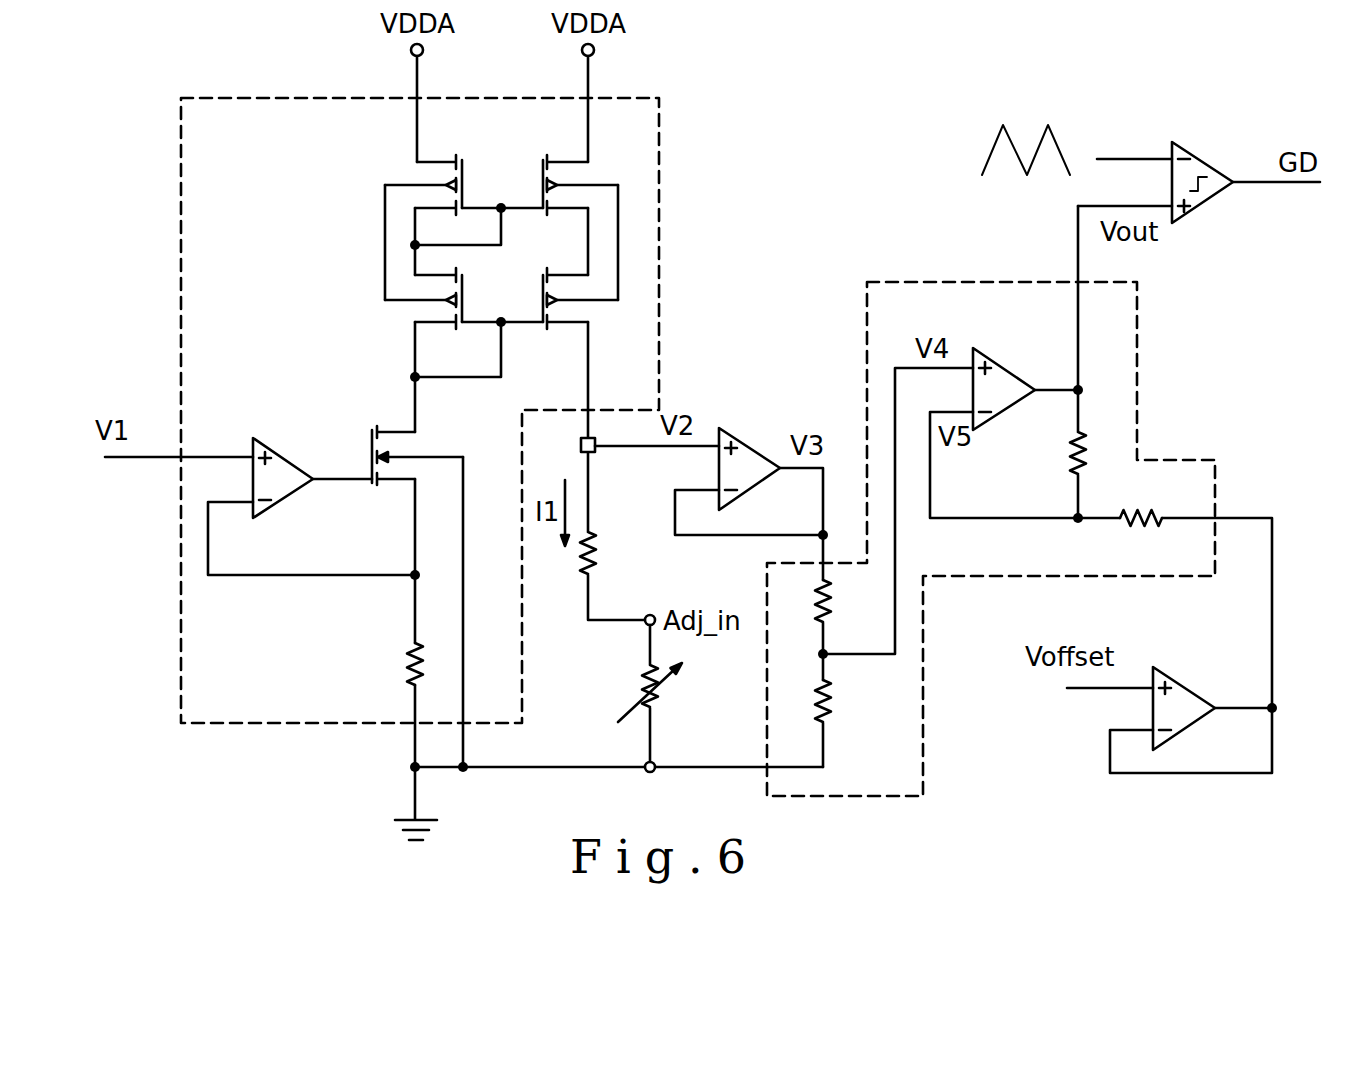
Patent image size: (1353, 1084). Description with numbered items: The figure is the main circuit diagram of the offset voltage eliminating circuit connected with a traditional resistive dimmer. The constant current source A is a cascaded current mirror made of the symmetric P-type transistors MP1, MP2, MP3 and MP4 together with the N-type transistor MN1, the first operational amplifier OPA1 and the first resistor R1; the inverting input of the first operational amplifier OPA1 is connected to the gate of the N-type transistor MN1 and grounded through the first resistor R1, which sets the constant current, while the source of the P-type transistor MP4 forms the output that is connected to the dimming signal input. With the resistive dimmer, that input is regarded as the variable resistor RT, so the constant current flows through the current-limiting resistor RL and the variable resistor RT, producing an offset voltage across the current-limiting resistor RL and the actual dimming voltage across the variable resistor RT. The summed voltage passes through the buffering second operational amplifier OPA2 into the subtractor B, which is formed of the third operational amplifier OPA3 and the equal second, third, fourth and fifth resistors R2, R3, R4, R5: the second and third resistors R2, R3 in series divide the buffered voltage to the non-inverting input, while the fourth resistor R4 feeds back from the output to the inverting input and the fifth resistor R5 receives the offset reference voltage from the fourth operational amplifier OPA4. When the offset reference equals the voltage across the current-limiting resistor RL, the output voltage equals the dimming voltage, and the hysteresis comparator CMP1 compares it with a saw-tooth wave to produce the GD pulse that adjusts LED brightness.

The P-type transistor MP1 is at (436, 168).
The P-type transistor MP2 is at (436, 317).
The P-type transistor MP3 is at (571, 168).
The P-type transistor MP4 is at (571, 317).
The N-type transistor MN1 is at (403, 438).
The first operational amplifier OPA1 is at (311, 457).
The second operational amplifier OPA2 is at (709, 483).
The third operational amplifier OPA3 is at (1025, 414).
The fourth operational amplifier OPA4 is at (1169, 687).
The hysteresis comparator CMP1 is at (1199, 163).
The first resistor R1 is at (394, 664).
The second resistor R2 is at (846, 603).
The third resistor R3 is at (846, 703).
The fourth resistor R4 is at (1058, 362).
The fifth resistor R5 is at (1141, 500).
The current-limiting resistor RL is at (612, 536).
The variable resistor RT is at (660, 693).
The constant current source A is at (659, 258).
The subtractor B is at (1137, 405).